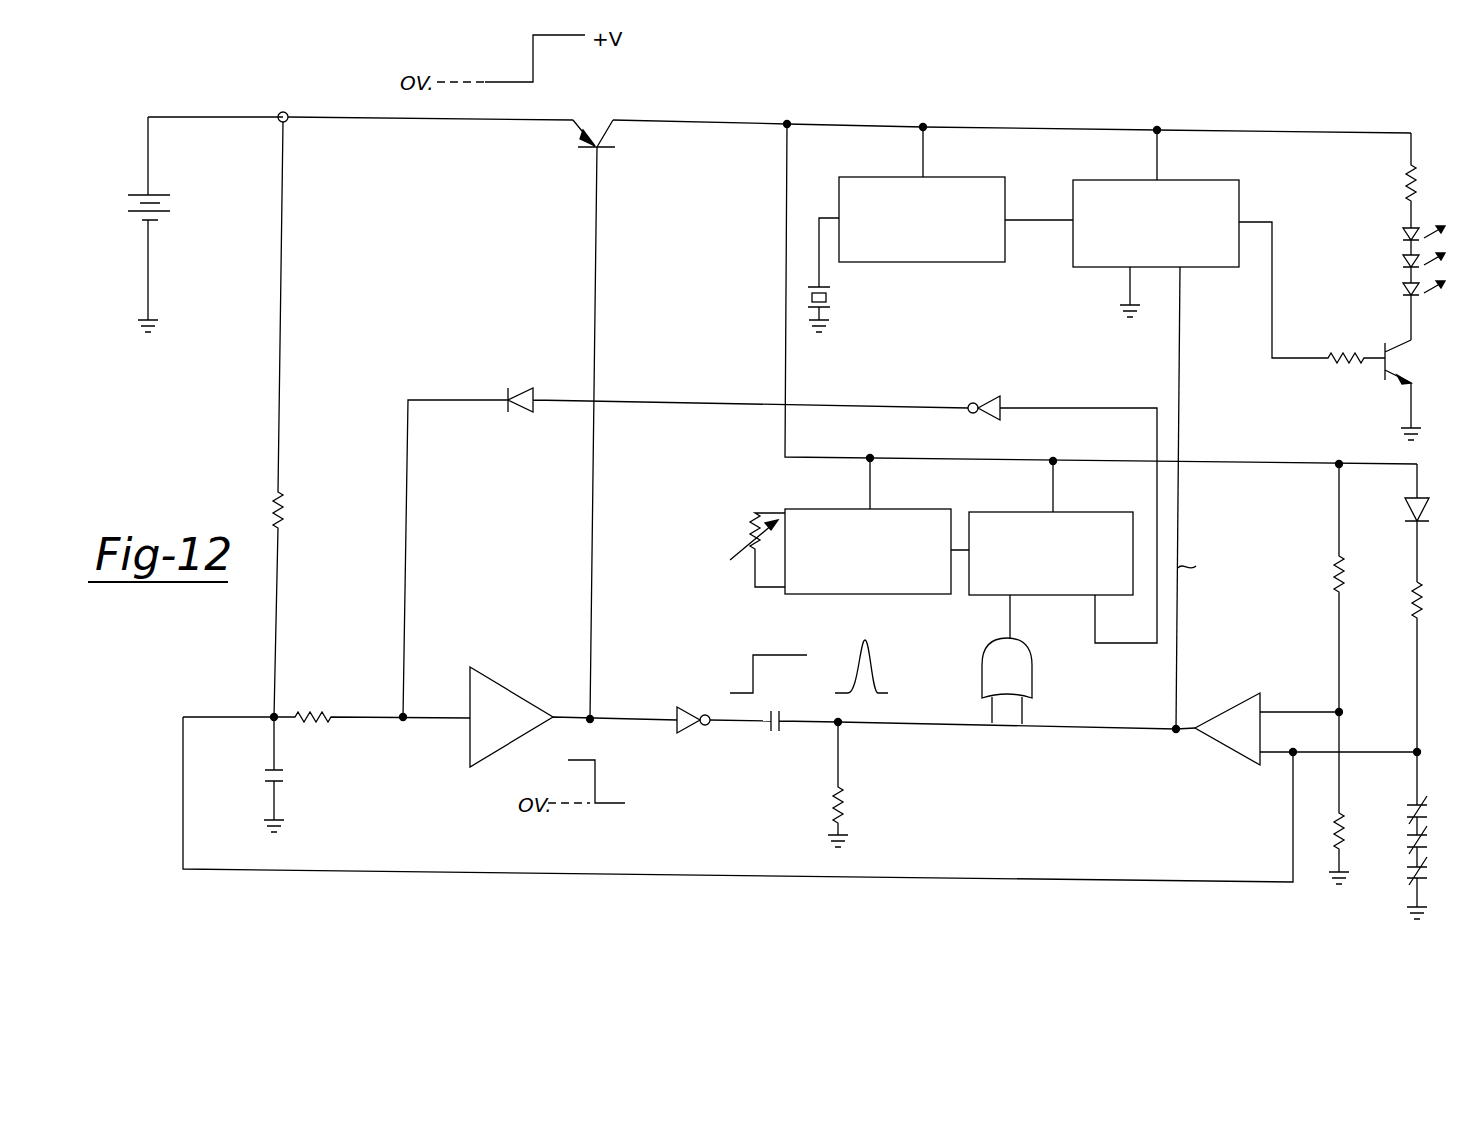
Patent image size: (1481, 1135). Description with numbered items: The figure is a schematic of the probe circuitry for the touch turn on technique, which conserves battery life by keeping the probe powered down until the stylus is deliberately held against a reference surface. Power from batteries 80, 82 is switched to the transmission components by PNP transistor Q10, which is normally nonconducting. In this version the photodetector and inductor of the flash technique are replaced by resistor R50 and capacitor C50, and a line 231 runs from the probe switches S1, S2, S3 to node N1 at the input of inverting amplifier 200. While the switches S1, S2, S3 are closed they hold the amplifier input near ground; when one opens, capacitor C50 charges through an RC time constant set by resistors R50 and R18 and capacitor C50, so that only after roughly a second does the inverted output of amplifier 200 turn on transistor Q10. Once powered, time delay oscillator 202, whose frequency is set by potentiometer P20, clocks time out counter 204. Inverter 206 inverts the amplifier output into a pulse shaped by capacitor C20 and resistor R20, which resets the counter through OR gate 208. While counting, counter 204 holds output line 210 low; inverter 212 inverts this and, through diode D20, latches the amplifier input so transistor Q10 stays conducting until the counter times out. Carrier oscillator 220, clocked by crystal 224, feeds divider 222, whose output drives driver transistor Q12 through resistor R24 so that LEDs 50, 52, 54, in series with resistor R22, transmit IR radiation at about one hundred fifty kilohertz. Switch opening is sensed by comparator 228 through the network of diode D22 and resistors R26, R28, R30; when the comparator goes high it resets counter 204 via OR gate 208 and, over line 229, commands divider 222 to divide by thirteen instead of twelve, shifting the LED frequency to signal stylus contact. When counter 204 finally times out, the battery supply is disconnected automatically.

The battery 80 is at (173, 200).
The battery 82 is at (175, 220).
The PNP transistor Q10 is at (577, 133).
The resistor R50 is at (306, 419).
The node N1 is at (272, 712).
The capacitor C50 is at (299, 774).
The resistor R18 is at (326, 699).
The diode D20 is at (520, 410).
The inverting amplifier 200 is at (478, 758).
The inverter 206 is at (672, 727).
The capacitor C20 is at (795, 739).
The resistor R20 is at (866, 783).
The carrier oscillator 220 is at (925, 262).
The crystal 224 is at (833, 297).
The divider 222 is at (1068, 262).
The line 229 is at (1182, 432).
The output line 210 is at (1212, 565).
The resistor R22 is at (1437, 180).
The LED 50 is at (1400, 237).
The LED 52 is at (1400, 265).
The LED 54 is at (1400, 292).
The resistor R24 is at (1312, 292).
The driver transistor Q12 is at (1380, 372).
The inverter 212 is at (990, 396).
The time delay oscillator 202 is at (930, 509).
The potentiometer P20 is at (745, 528).
The time out counter 204 is at (1150, 488).
The OR gate 208 is at (1034, 690).
The comparator 228 is at (1222, 712).
The resistor R26 is at (1367, 588).
The resistor R30 is at (1362, 798).
The diode D22 is at (1443, 523).
The resistor R28 is at (1444, 667).
The switch S1 is at (1427, 810).
The switch S2 is at (1427, 840).
The switch S3 is at (1427, 870).
The line 231 is at (698, 876).